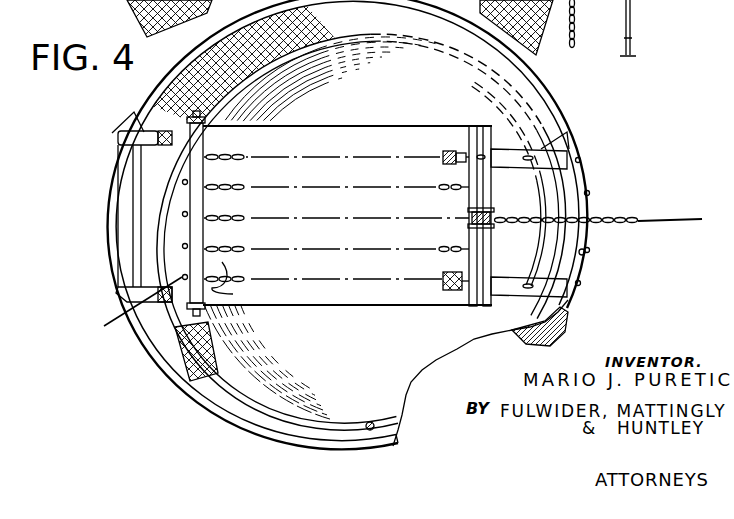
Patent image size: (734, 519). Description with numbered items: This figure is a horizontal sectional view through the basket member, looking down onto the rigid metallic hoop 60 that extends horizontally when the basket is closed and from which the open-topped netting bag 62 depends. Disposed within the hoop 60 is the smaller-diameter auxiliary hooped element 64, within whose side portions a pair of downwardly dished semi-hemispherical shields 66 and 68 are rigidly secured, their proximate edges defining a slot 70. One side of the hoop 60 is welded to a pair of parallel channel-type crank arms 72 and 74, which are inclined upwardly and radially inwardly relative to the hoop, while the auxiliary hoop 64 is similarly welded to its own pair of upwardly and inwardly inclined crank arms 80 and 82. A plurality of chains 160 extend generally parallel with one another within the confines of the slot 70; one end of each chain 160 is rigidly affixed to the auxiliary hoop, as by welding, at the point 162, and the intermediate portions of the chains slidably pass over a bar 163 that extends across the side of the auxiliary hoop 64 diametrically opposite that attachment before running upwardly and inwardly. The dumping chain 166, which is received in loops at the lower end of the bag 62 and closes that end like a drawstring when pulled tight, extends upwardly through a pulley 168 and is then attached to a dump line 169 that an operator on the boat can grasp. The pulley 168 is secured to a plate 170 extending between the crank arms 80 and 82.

The hoop 60 is at (150, 84).
The bag 62 is at (145, 8).
The auxiliary hooped element 64 is at (240, 55).
The shield 66 is at (336, 79).
The shield 68 is at (305, 362).
The slot 70 is at (281, 306).
The crank arm 72 is at (120, 140).
The crank arm 74 is at (110, 273).
The crank arm 80 is at (513, 160).
The crank arm 82 is at (490, 303).
The chain 160 is at (239, 283).
The point of affixation of chain to auxiliary hoop 162 is at (584, 254).
The bar 163 is at (127, 314).
The dumping chain 166 is at (575, 20).
The pulley 168 is at (470, 219).
The dump line 169 is at (666, 222).
The plate 170 is at (300, 129).